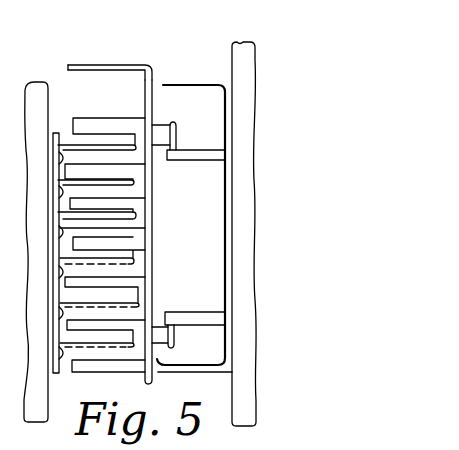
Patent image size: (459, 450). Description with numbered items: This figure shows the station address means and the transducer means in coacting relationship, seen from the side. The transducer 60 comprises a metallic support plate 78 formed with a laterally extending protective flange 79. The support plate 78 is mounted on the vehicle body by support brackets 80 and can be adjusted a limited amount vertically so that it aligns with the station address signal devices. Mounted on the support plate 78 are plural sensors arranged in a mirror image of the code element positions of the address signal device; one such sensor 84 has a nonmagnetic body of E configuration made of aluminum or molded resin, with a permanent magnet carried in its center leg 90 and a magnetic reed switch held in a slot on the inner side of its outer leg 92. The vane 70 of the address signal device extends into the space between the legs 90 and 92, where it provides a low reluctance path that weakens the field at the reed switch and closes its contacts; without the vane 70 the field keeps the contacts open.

The transducer 60 is at (78, 88).
The vane 70 is at (82, 222).
The support plate 78 is at (148, 102).
The protective flange 79 is at (133, 64).
The support brackets 80 is at (186, 149).
The sensor 84 is at (128, 196).
The center leg 90 is at (124, 250).
The outer leg 92 is at (122, 210).